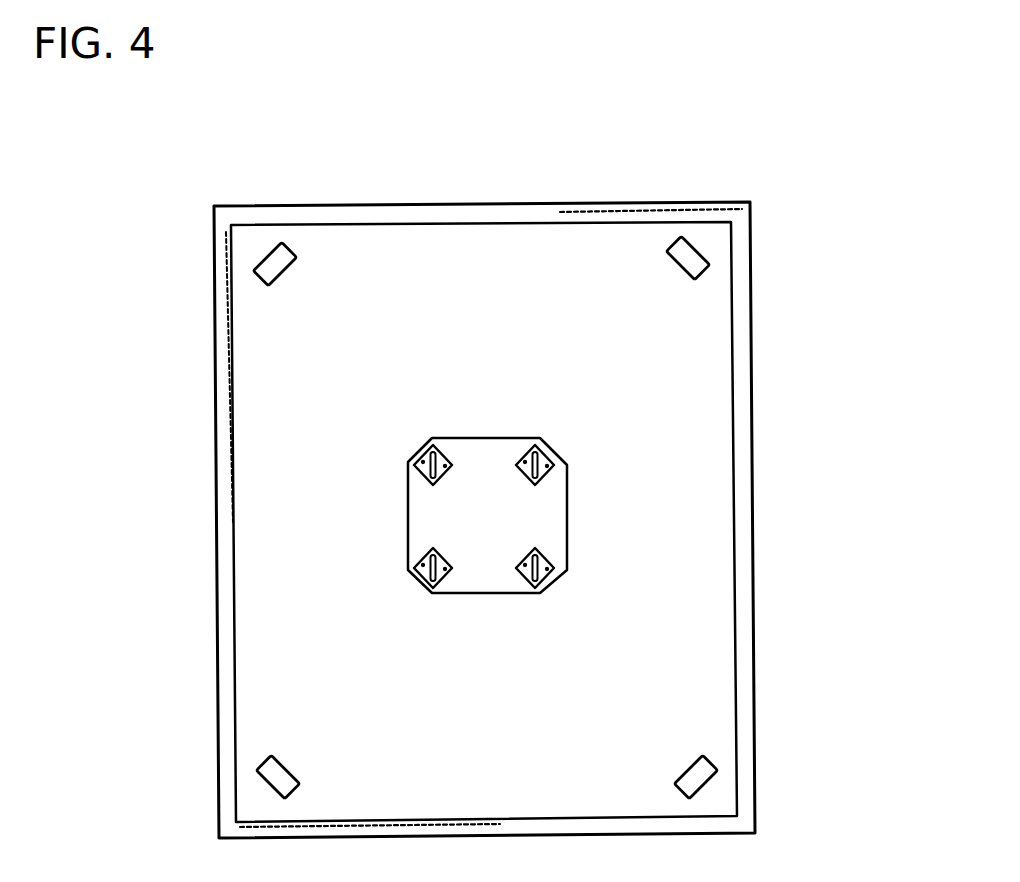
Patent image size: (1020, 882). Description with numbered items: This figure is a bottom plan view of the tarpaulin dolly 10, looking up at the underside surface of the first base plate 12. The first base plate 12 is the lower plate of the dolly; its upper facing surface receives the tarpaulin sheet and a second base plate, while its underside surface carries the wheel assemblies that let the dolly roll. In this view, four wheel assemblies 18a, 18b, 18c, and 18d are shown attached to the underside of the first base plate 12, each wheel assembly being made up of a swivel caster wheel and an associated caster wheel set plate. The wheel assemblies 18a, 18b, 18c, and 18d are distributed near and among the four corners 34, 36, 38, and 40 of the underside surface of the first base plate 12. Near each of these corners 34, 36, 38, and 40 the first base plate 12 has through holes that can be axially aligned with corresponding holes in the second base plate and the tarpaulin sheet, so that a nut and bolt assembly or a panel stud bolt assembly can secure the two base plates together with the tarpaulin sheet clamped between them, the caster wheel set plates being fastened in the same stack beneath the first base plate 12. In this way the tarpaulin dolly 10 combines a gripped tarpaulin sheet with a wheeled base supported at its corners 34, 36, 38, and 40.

The tarpaulin dolly 10 is at (484, 431).
The first base plate 12 is at (635, 515).
The wheel assembly 18a is at (272, 428).
The wheel assembly 18b is at (703, 431).
The wheel assembly 18c is at (275, 586).
The wheel assembly 18d is at (701, 599).
The corner 34 is at (267, 372).
The corner 36 is at (719, 374).
The corner 38 is at (263, 648).
The corner 40 is at (719, 656).